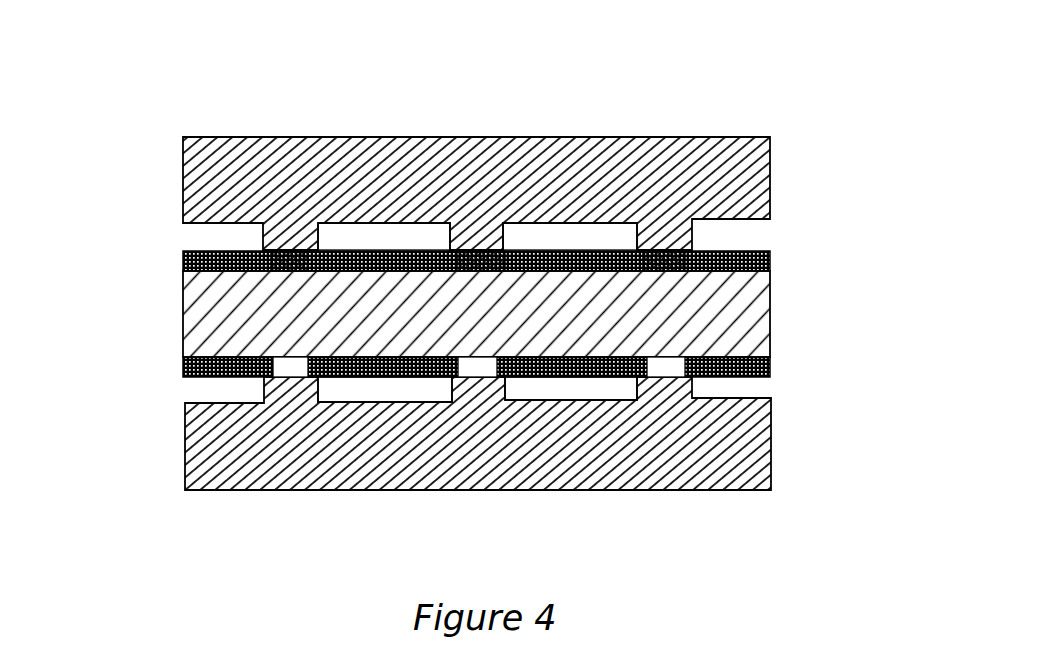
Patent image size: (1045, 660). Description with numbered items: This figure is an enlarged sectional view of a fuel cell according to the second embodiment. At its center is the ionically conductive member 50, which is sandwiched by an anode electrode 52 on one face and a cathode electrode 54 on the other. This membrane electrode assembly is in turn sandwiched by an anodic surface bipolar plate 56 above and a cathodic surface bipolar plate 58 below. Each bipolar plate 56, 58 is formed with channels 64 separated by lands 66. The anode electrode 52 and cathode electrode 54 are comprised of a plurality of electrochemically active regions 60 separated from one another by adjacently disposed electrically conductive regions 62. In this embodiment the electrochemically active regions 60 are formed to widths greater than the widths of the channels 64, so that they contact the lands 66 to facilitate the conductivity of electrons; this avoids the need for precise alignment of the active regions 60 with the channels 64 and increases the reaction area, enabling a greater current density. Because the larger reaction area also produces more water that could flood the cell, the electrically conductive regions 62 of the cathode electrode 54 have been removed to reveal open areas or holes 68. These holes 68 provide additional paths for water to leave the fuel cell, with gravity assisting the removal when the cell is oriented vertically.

The ionically conductive member 50 is at (178, 318).
The anode electrode 52 is at (178, 261).
The cathode electrode 54 is at (178, 370).
The anodic surface bipolar plate 56 is at (713, 127).
The cathodic surface bipolar plate 58 is at (216, 500).
The electrochemically active regions 60 is at (463, 314).
The electrically conductive regions 62 is at (692, 246).
The channels 64 is at (561, 222).
The lands 66 is at (490, 268).
The open areas or holes 68 is at (690, 345).